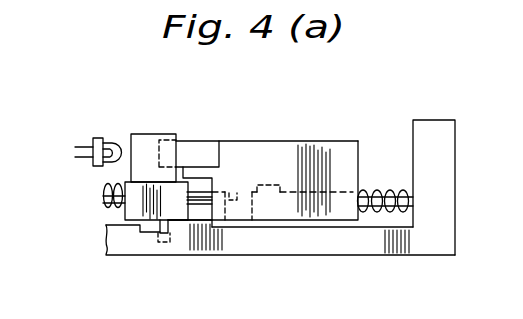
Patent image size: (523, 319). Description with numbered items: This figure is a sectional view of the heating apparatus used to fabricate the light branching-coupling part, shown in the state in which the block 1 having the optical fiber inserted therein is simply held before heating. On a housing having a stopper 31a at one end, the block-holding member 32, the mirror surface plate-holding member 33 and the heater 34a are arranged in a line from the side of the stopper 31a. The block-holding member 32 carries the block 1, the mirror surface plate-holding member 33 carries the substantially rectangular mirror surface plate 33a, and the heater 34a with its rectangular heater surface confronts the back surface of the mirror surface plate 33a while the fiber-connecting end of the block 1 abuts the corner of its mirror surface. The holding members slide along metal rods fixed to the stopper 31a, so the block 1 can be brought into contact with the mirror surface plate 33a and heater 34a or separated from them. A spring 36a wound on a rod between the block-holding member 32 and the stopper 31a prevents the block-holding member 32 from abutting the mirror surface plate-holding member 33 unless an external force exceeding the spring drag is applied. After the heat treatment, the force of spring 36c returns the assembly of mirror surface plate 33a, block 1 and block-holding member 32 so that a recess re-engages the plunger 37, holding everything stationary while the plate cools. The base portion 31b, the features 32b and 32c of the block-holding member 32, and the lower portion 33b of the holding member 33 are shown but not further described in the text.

The block 1 is at (210, 140).
The stopper 31a is at (432, 120).
The base plate 31b is at (137, 233).
The block-holding member 32 is at (325, 141).
The slider projection 32b is at (313, 193).
The slider recess 32c is at (273, 192).
The mirror surface plate-holding member 33 is at (138, 205).
The mirror surface plate 33a is at (157, 133).
The holder tab 33b is at (170, 233).
The heater 34a is at (116, 139).
The spring 36a is at (380, 213).
The spring 36c is at (108, 208).
The plunger 37 is at (237, 193).